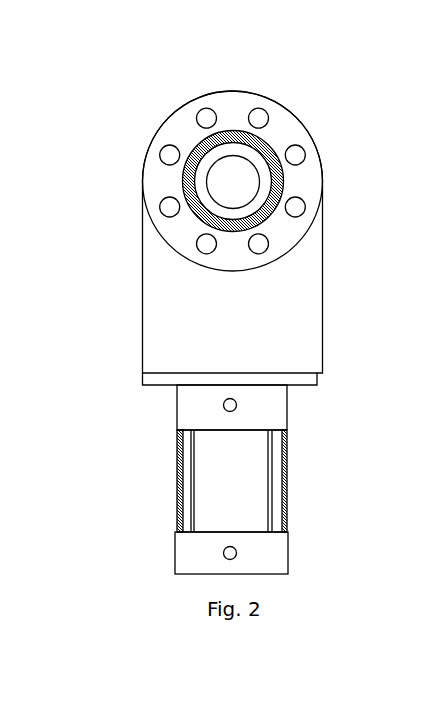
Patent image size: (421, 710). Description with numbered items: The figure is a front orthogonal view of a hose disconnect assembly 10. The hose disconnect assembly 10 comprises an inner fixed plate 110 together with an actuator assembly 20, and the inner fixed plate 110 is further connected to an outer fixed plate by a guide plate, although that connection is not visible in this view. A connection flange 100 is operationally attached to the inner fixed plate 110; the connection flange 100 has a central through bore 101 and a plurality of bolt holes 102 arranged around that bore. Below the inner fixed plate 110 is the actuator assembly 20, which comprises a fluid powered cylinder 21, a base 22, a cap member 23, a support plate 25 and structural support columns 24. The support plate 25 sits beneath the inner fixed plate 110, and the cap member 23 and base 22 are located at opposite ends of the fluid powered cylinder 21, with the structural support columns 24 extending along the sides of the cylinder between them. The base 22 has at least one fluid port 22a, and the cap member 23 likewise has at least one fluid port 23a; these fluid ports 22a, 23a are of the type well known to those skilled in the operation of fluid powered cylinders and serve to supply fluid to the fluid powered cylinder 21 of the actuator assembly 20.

The hose disconnect assembly 10 is at (110, 342).
The connection flange 100 is at (280, 128).
The central through bore 101 is at (223, 180).
The bolt holes 102 is at (215, 112).
The inner fixed plate 110 is at (290, 310).
The support plate 25 is at (320, 380).
The actuator assembly 20 is at (161, 505).
The fluid powered cylinder 21 is at (252, 497).
The base 22 is at (275, 557).
The fluid port 22a is at (227, 563).
The cap member 23 is at (275, 405).
The fluid port 23a is at (222, 402).
The structural support columns 24 is at (280, 458).